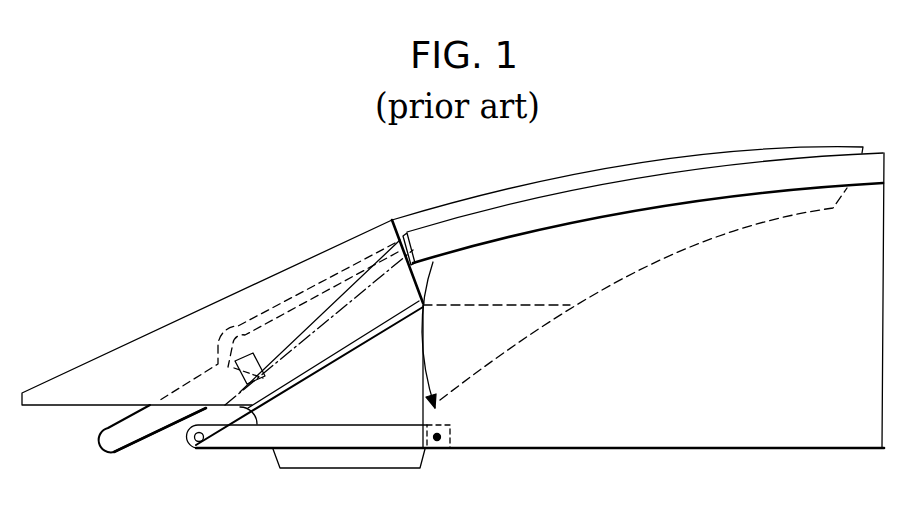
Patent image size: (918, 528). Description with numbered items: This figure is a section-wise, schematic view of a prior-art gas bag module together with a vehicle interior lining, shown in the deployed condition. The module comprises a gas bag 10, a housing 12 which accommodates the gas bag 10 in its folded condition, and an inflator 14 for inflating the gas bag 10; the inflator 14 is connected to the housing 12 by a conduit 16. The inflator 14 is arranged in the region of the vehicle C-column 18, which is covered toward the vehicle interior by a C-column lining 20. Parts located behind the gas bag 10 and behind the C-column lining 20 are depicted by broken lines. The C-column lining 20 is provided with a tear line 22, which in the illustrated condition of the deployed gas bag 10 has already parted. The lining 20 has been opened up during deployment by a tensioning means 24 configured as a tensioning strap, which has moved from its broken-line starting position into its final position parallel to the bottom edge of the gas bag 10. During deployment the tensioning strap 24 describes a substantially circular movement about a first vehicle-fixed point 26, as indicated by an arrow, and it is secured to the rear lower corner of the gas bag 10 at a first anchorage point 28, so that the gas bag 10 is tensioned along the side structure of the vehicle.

The gas bag 10 is at (715, 428).
The housing 12 is at (780, 173).
The inflator 14 is at (115, 450).
The conduit 16 is at (318, 282).
The vehicle C-column 18 is at (470, 268).
The C-column lining 20 is at (182, 335).
The tear line 22 is at (332, 363).
The tensioning strap 24 is at (268, 433).
The first vehicle-fixed point 26 is at (200, 450).
The first anchorage point 28 is at (437, 453).